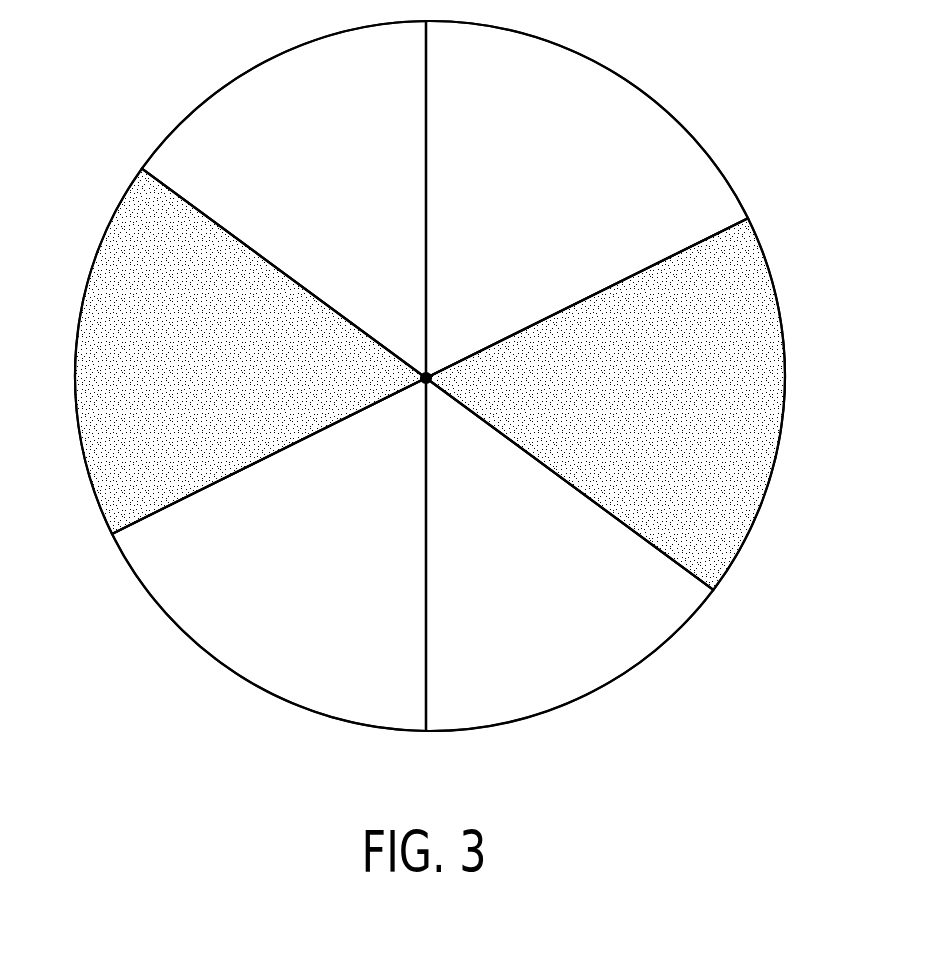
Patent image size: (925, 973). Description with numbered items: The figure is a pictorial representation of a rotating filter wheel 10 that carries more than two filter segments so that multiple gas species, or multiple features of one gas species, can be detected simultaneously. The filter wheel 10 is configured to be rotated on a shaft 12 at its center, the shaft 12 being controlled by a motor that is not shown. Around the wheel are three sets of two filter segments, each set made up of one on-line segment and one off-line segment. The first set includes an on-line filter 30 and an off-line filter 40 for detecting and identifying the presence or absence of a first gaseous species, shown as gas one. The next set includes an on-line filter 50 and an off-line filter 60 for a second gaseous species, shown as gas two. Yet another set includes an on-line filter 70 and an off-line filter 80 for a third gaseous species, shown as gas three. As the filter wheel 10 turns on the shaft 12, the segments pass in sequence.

The filter wheel 10 is at (636, 83).
The shaft 12 is at (427, 381).
The on-line filter 30 is at (686, 152).
The off-line filter 40 is at (197, 117).
The on-line filter 50 is at (88, 345).
The off-line filter 60 is at (205, 635).
The on-line filter 70 is at (647, 635).
The off-line filter 80 is at (760, 398).